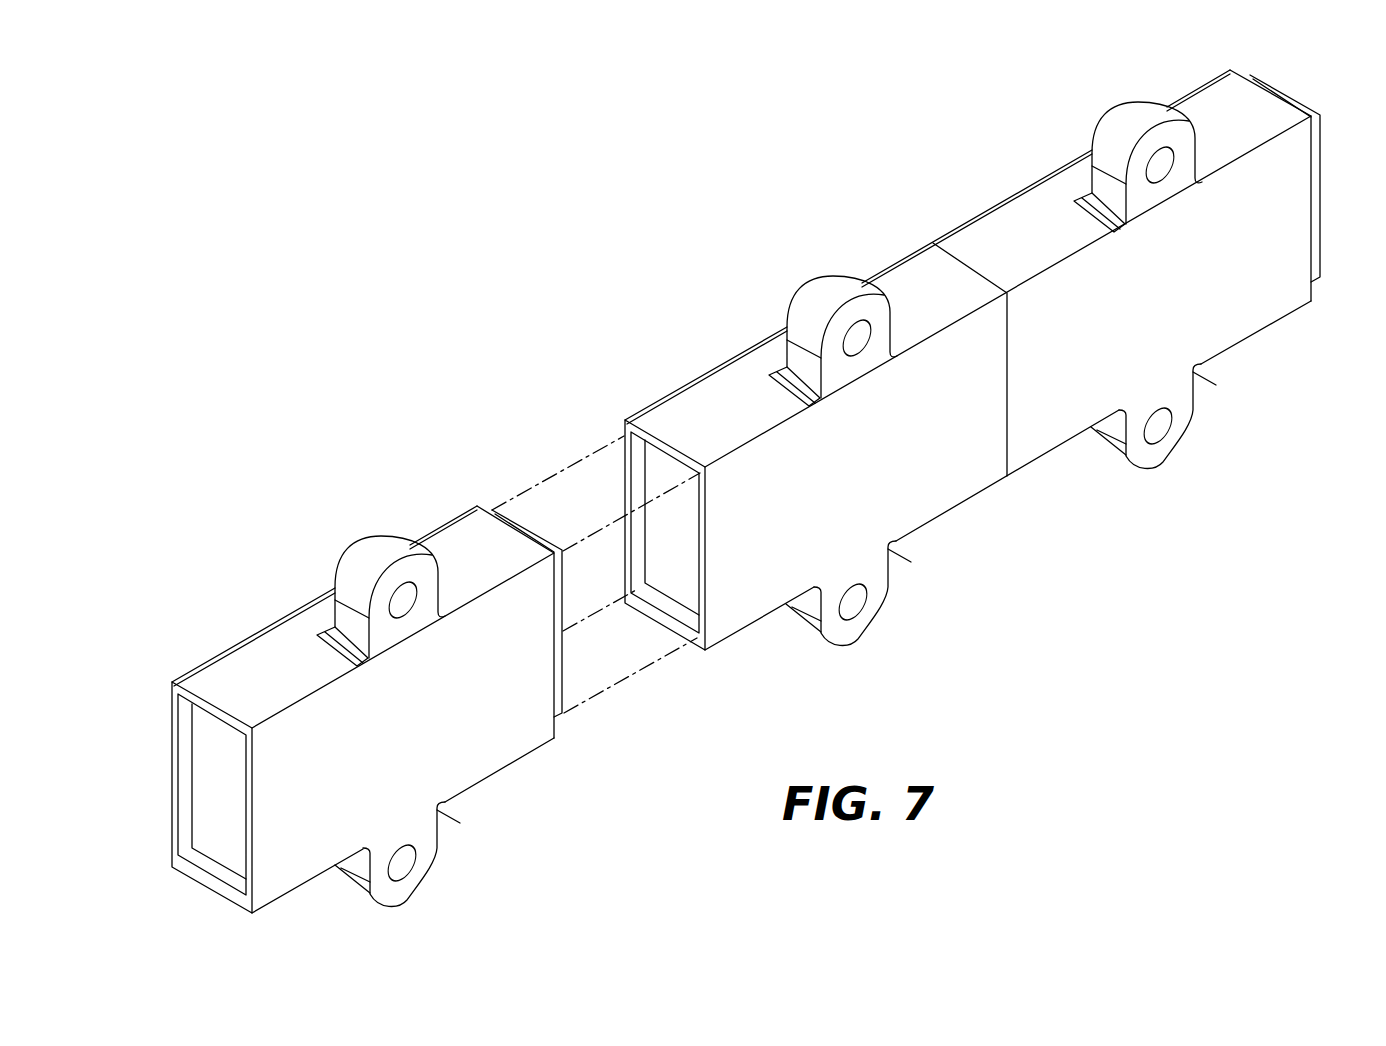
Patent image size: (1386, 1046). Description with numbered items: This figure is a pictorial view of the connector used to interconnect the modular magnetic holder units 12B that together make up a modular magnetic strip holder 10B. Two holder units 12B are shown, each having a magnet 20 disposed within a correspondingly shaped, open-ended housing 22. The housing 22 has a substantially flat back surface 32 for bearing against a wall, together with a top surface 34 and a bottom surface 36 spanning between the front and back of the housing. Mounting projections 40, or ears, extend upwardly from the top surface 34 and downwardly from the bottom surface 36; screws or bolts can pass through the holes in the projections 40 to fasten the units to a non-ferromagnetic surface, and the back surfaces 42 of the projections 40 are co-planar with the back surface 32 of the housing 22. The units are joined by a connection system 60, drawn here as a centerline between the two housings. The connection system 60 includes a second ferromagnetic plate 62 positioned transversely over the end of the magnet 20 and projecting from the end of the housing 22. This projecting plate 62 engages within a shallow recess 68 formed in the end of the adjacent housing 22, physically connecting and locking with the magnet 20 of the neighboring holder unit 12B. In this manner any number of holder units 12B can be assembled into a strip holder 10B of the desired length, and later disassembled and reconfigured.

The modular magnetic strip holder 10B is at (292, 341).
The magnetic holder unit 12B is at (293, 912).
The magnet 20 is at (215, 776).
The housing 22 is at (474, 506).
The back surface 32 is at (421, 697).
The top surface 34 is at (258, 673).
The bottom surface 36 is at (660, 629).
The mounting projection 40 is at (372, 553).
The back surface of mounting projection 42 is at (431, 568).
The connection system 60 is at (548, 460).
The second ferromagnetic plate 62 is at (565, 667).
The shallow recess 68 is at (182, 752).